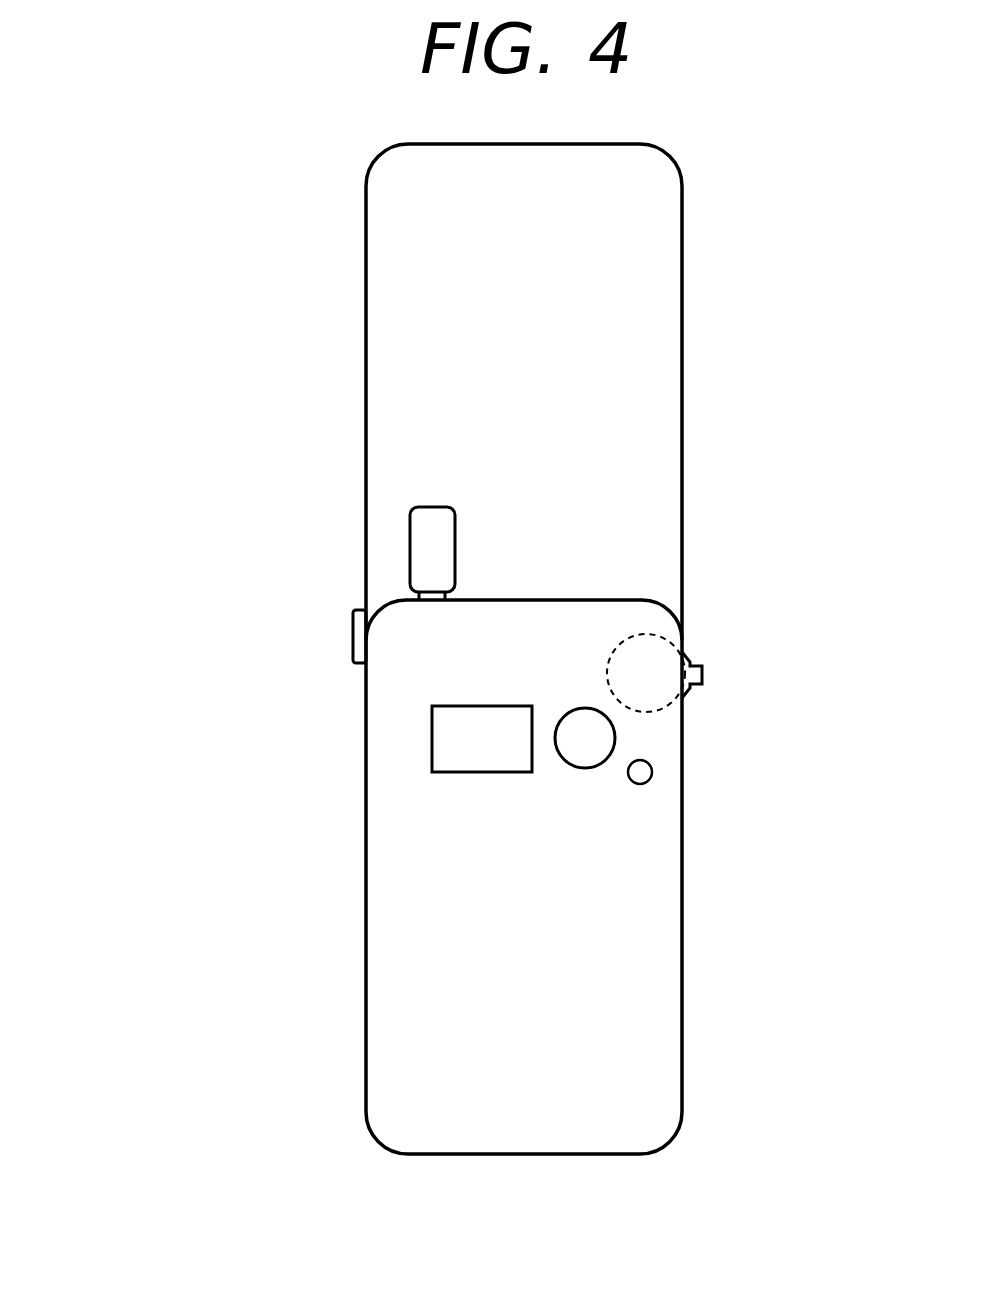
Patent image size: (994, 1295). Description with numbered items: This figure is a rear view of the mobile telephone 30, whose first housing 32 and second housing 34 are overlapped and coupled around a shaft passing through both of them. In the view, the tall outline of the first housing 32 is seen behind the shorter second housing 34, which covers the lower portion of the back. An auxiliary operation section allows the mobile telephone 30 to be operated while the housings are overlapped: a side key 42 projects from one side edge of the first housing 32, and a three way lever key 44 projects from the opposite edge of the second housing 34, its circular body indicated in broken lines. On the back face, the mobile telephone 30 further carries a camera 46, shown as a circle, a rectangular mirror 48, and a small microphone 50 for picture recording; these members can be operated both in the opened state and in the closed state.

The mobile telephone 30 is at (455, 649).
The first housing 32 is at (378, 338).
The second housing 34 is at (378, 979).
The side key 42 is at (358, 636).
The three way lever key 44 is at (702, 673).
The camera 46 is at (606, 738).
The mirror 48 is at (444, 738).
The microphone 50 is at (645, 772).